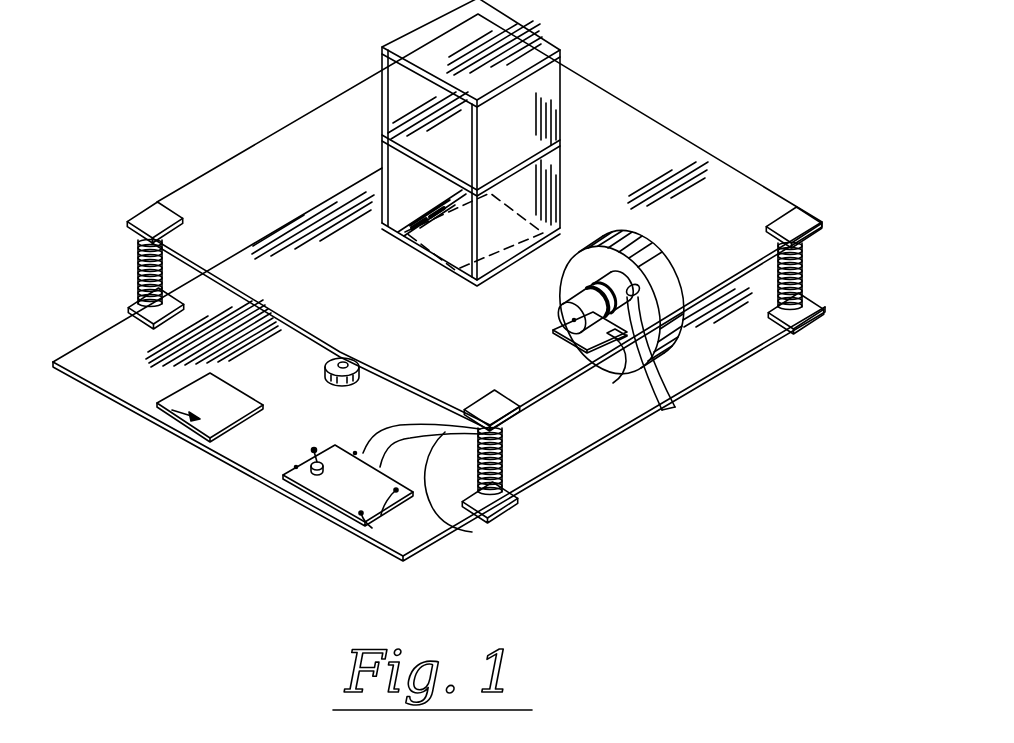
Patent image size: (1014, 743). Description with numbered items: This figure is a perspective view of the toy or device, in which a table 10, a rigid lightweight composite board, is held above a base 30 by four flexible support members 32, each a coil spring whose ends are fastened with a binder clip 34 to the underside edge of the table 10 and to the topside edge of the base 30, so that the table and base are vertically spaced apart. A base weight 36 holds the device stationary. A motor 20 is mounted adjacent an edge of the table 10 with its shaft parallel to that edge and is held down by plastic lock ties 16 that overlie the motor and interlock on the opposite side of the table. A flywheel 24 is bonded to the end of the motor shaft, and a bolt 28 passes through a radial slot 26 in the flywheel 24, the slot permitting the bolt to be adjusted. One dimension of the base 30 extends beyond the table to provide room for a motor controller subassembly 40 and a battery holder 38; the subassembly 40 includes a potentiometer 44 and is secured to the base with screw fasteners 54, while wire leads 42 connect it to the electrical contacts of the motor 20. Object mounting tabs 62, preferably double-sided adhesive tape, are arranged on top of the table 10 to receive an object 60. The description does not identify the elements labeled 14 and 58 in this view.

The table 10 is at (272, 141).
The motor bracket 14 is at (555, 328).
The plastic lock ties 16 is at (613, 383).
The motor 20 is at (570, 302).
The flywheel 24 is at (640, 252).
The radial slot 26 is at (655, 374).
The bolt 28 is at (667, 408).
The base 30 is at (107, 352).
The flexible support members 32 is at (138, 277).
The binder clip 34 is at (153, 220).
The base weight 36 is at (328, 369).
The battery holder 38 is at (157, 413).
The motor controller subassembly 40 is at (306, 493).
The wire leads 42 is at (472, 532).
The potentiometer 44 is at (312, 455).
The screw fasteners 54 is at (372, 528).
The glass plate 58 is at (633, 145).
The object 60 is at (382, 168).
The object mounting tabs 62 is at (440, 250).